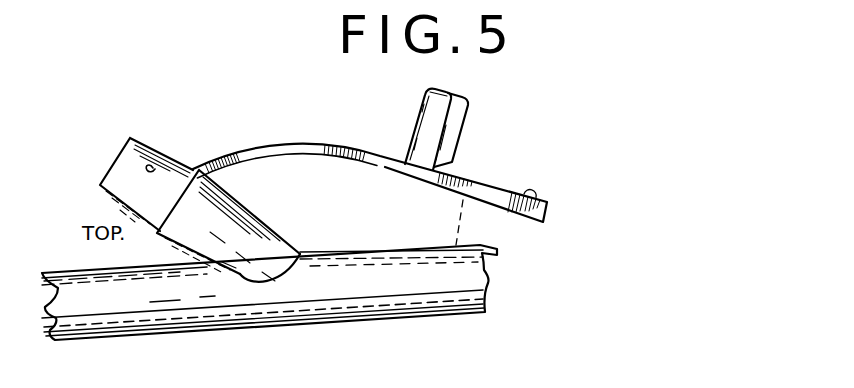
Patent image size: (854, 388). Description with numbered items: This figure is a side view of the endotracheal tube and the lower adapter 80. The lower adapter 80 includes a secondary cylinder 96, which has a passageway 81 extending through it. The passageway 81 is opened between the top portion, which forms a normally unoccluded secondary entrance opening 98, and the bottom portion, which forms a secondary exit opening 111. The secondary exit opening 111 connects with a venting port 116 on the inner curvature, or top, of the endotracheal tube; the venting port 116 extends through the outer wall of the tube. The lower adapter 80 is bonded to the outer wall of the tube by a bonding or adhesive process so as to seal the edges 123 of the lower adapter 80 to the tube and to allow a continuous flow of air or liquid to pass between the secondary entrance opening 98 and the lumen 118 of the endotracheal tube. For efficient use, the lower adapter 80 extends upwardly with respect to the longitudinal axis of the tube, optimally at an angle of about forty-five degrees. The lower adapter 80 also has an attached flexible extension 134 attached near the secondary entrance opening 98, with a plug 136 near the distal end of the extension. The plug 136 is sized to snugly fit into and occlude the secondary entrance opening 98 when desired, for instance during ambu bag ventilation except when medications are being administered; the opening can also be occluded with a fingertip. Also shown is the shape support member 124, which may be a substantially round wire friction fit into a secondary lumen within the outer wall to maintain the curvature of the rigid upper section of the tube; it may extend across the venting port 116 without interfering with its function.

The lower adapter 80 is at (244, 194).
The passageway 81 is at (153, 168).
The secondary cylinder 96 is at (267, 226).
The secondary entrance opening 98 is at (111, 160).
The secondary exit opening 111 is at (286, 283).
The venting port 116 is at (302, 253).
The lumen 118 is at (488, 283).
The edges 123 is at (233, 284).
The shape support member 124 is at (438, 222).
The flexible extension 134 is at (283, 123).
The plug 136 is at (462, 133).